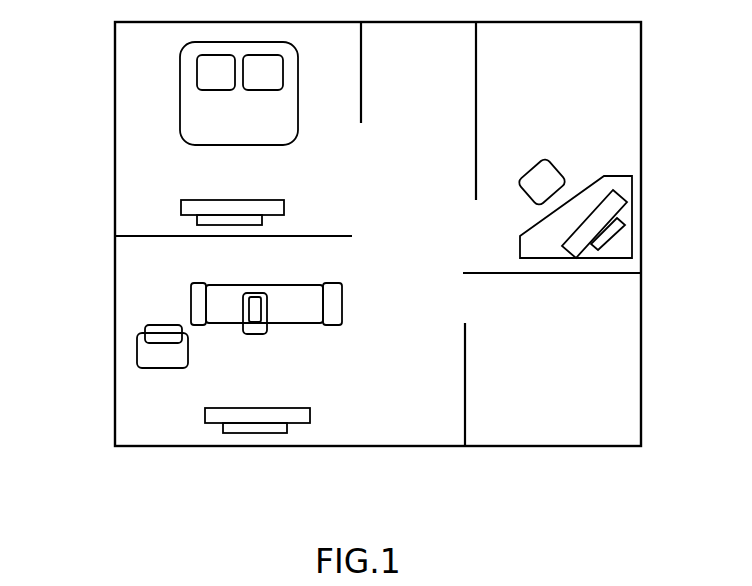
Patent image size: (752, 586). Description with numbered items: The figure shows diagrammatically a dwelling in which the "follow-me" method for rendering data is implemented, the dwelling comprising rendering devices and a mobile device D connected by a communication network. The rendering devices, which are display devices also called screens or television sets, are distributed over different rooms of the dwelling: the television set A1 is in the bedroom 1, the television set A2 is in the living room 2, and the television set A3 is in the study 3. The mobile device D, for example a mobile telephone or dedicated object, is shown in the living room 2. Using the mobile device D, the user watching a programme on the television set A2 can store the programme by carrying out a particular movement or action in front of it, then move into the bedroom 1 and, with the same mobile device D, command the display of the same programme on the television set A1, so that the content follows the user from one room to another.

The bedroom 1 is at (115, 145).
The living room 2 is at (138, 288).
The study 3 is at (624, 66).
The rendering device A1 is at (284, 210).
The rendering device A2 is at (310, 416).
The rendering device A3 is at (622, 212).
The mobile device D is at (267, 300).